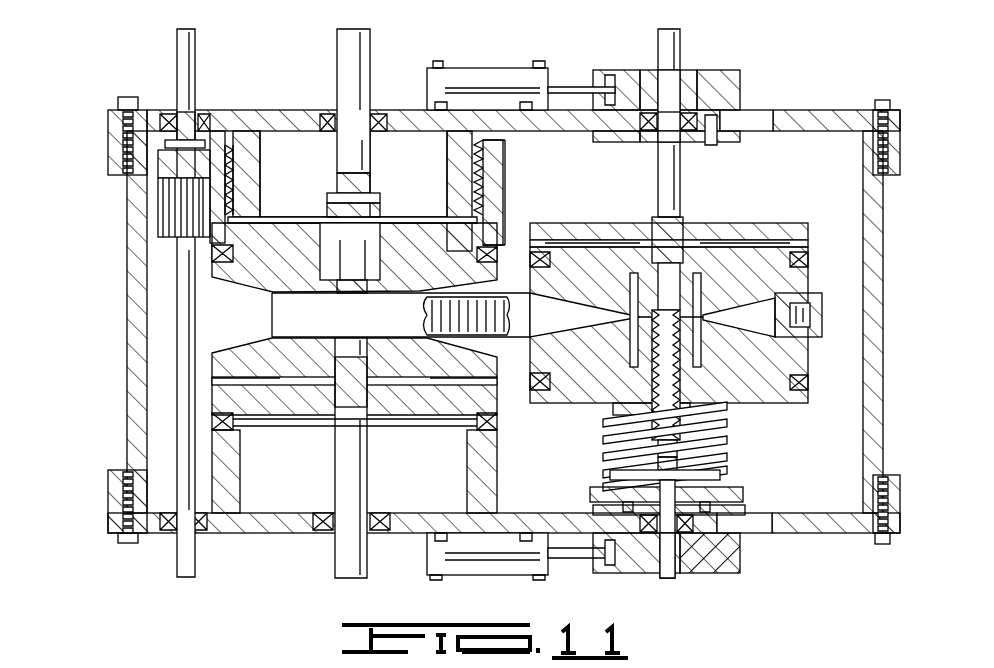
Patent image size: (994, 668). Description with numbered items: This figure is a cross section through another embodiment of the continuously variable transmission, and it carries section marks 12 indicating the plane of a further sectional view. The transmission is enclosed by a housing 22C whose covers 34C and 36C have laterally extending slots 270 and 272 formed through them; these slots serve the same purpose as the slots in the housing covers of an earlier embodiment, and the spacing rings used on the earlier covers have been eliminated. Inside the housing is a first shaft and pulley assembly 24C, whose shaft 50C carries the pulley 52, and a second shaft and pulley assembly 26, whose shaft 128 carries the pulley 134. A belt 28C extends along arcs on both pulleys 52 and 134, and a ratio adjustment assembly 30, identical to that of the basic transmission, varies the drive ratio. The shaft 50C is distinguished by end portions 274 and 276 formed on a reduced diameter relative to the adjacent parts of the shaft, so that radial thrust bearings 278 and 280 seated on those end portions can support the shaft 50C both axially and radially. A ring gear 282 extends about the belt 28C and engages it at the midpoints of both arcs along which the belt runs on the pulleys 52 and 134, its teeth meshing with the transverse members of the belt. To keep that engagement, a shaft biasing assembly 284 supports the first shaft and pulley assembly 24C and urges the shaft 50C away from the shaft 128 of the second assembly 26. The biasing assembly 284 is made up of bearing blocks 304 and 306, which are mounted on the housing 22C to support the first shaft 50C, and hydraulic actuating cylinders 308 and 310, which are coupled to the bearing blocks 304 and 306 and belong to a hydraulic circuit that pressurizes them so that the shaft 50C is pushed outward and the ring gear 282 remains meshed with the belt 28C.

The section line 12- 12 is at (76, 320).
The housing 22C is at (823, 105).
The first shaft and pulley assembly 24C is at (810, 270).
The second shaft and pulley assembly 26 is at (335, 180).
The belt 28C is at (805, 330).
The ratio adjustment assembly 30 is at (485, 143).
The cover 34C is at (832, 522).
The cover 36C is at (845, 118).
The shaft 50C is at (690, 180).
The pulley 52 is at (812, 365).
The shaft 128 is at (343, 470).
The pulley 134 is at (212, 362).
The laterally extending slot 270 is at (760, 522).
The laterally extending slot 272 is at (750, 118).
The end portion 274 is at (670, 553).
The end portion 276 is at (678, 45).
The radial thrust bearing 278 is at (712, 573).
The radial thrust bearing 280 is at (735, 95).
The ring gear 282 is at (812, 318).
The shaft biasing assembly 284 is at (625, 65).
The bearing block 304 is at (636, 570).
The bearing block 306 is at (698, 80).
The hydraulic actuating cylinder 308 is at (500, 562).
The hydraulic actuating cylinder 310 is at (514, 78).